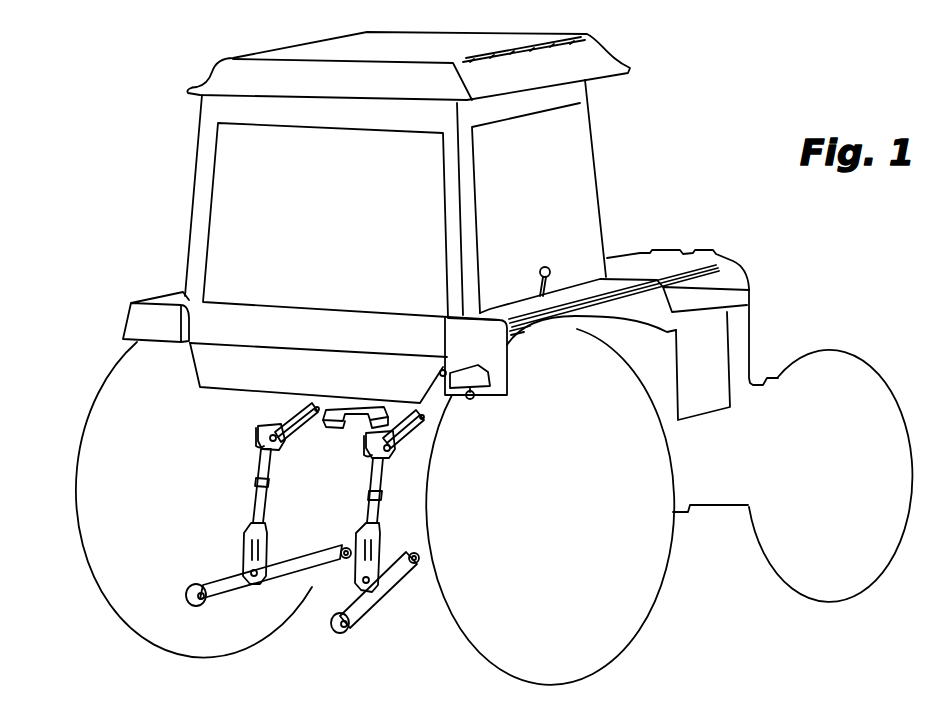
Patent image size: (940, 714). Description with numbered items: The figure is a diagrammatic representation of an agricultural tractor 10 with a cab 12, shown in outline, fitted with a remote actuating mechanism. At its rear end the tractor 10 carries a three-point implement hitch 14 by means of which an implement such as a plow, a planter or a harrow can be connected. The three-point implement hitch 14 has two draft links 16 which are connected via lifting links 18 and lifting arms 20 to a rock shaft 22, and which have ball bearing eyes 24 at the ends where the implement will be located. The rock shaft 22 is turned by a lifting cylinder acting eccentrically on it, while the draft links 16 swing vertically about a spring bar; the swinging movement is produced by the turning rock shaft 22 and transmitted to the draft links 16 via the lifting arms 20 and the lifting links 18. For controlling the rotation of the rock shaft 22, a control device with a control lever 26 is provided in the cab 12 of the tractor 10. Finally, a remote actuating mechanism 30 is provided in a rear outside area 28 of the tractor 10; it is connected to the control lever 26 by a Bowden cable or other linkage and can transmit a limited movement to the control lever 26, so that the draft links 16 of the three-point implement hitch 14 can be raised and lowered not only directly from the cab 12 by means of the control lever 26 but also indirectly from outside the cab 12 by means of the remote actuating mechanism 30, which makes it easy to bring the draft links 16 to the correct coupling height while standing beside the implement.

The agricultural tractor 10 is at (494, 358).
The cab 12 is at (332, 254).
The three-point implement hitch 14 is at (309, 514).
The draft links 16 is at (229, 600).
The lifting links 18 is at (258, 466).
The lifting arms 20 is at (412, 438).
The rock shaft 22 is at (337, 374).
The ball bearing eyes 24 is at (190, 600).
The control lever 26 is at (550, 268).
The rear outside area 28 is at (536, 376).
The remote actuating mechanism 30 is at (504, 380).